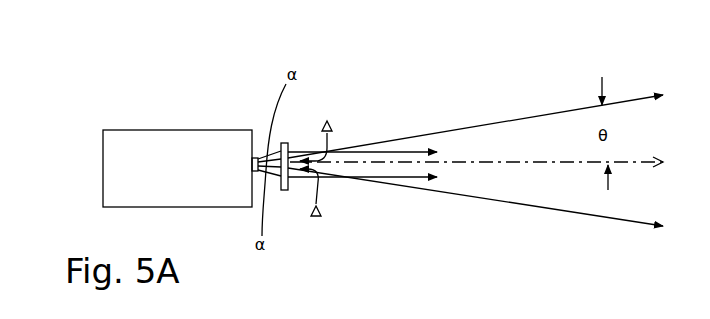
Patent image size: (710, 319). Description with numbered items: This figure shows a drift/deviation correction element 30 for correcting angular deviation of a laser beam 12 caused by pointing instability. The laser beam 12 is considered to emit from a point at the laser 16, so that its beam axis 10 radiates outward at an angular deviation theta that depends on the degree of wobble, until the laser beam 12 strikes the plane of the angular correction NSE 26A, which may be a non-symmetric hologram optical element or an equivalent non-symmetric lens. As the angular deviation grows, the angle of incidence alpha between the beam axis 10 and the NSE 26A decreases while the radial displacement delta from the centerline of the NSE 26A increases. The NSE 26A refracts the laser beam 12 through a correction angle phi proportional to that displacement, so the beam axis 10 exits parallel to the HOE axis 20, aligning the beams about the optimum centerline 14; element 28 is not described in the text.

The beam axis 10 is at (250, 218).
The laser beam 12 is at (395, 221).
The optimum centerline 14 is at (533, 162).
The laser 16 is at (163, 169).
The HOE axis 20 is at (258, 172).
The angular correction NSE 26A is at (287, 141).
The emitted light rays 28 is at (253, 161).
The drift/deviation correction element 30 is at (322, 67).